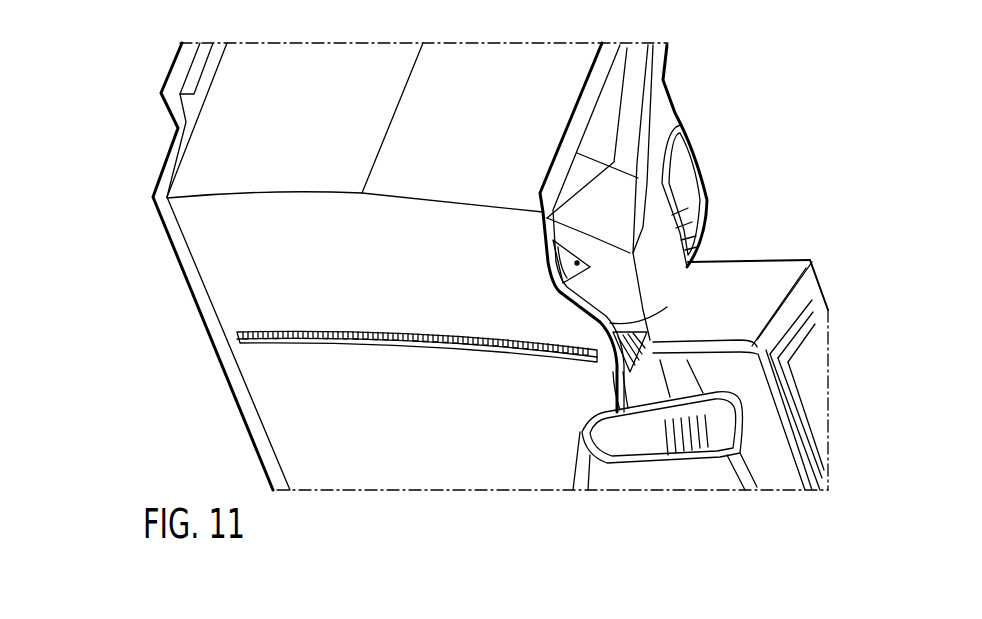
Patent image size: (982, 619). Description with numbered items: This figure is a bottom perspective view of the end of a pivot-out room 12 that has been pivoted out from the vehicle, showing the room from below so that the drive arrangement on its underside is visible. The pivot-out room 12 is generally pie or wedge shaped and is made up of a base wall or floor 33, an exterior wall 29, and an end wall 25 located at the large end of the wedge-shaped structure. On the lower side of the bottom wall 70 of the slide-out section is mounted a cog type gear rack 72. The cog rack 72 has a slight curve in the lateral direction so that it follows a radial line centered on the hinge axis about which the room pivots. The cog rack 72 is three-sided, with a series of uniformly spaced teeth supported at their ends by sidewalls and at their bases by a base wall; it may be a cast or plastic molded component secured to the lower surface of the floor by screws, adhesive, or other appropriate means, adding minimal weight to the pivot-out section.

The pivot-out room 12 is at (237, 402).
The end wall 25 is at (200, 172).
The exterior wall 29 is at (190, 293).
The base wall or floor 33 is at (607, 317).
The bottom wall 70 is at (328, 420).
The cog type gear rack 72 is at (320, 331).